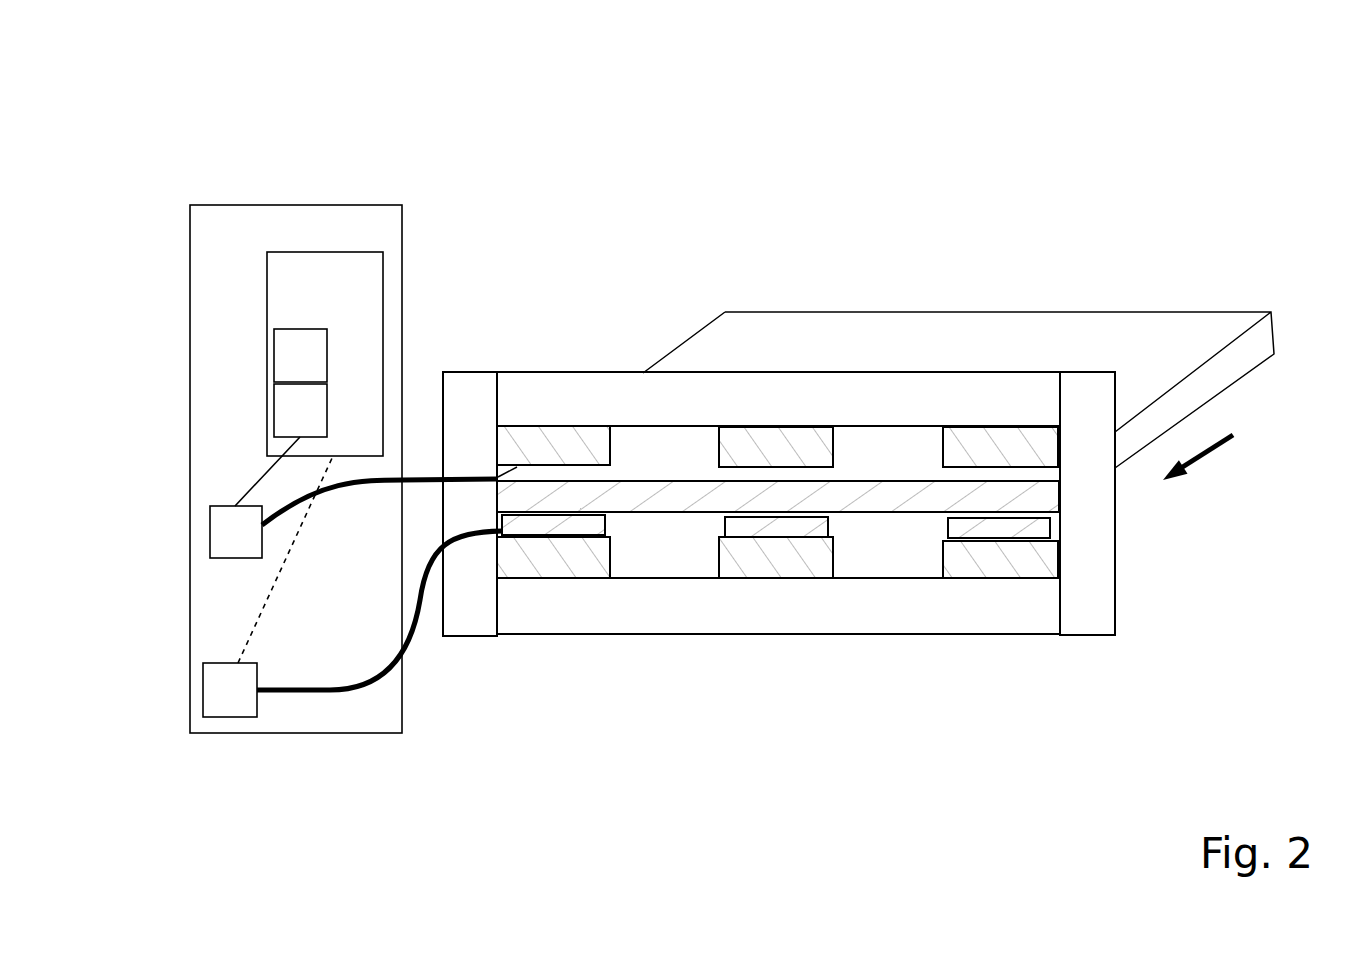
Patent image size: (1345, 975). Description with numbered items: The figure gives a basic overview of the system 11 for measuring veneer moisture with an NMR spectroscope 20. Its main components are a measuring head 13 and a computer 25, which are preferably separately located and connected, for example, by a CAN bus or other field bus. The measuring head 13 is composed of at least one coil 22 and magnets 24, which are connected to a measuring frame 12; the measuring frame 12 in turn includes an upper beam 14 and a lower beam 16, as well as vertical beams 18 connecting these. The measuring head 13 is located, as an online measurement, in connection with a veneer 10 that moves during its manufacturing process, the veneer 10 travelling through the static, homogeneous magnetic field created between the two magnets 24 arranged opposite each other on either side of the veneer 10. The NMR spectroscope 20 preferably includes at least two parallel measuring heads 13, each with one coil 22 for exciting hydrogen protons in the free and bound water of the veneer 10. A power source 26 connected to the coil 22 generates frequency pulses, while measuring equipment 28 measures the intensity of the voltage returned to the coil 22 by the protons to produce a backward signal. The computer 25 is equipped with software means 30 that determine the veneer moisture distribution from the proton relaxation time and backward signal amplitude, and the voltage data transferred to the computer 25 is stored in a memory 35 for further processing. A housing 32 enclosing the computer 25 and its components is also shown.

The veneer 10 is at (1143, 356).
The system 11 is at (1257, 241).
The measuring frame 12 is at (1093, 593).
The measuring head 13 is at (1000, 625).
The upper beam 14 is at (685, 402).
The lower beam 16 is at (776, 605).
The vertical beams 18 is at (182, 758).
The NMR spectroscope 20 is at (250, 120).
The coil 22 is at (590, 517).
The magnets 24 is at (553, 557).
The computer 25 is at (311, 310).
The power source 26 is at (213, 705).
The measuring equipment 28 is at (219, 547).
The software means 30 is at (283, 423).
The housing 32 is at (268, 205).
The memory 35 is at (283, 370).